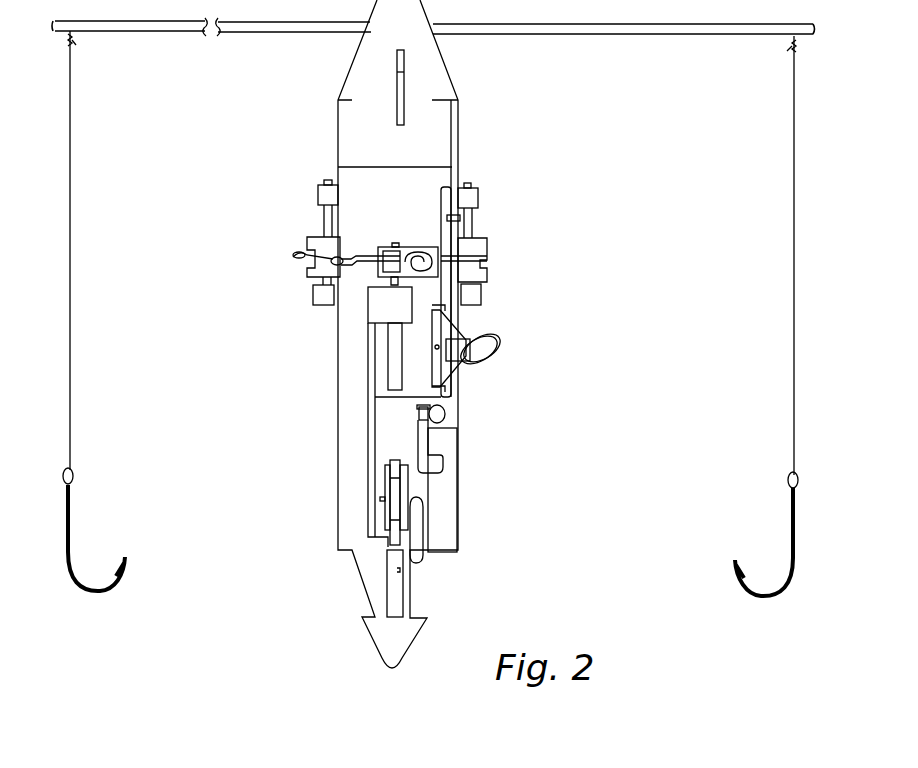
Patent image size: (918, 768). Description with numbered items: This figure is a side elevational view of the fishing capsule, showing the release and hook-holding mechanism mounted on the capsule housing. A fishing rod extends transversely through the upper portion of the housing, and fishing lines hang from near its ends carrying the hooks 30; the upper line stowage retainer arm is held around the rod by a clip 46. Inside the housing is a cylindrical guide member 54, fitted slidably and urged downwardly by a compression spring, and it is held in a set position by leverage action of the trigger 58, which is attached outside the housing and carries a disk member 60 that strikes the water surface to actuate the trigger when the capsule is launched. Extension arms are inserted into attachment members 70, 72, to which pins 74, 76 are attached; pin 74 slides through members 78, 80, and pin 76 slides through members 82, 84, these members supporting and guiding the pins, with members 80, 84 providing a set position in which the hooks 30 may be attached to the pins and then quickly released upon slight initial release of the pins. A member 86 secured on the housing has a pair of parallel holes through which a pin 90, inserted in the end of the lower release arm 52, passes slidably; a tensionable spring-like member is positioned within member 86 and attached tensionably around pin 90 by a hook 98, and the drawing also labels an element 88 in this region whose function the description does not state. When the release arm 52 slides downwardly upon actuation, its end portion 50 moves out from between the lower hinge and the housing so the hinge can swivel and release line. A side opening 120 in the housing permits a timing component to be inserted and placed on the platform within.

The hooks 30 is at (72, 535).
The clip 46 is at (422, 567).
The end portion 50 is at (385, 465).
The lower release arm 52 is at (372, 418).
The cylindrical guide member 54 is at (141, 761).
The first release member, or trigger 58 is at (468, 332).
The disk member 60 is at (489, 357).
The attachment member 70 is at (482, 296).
The attachment member 72 is at (313, 297).
The pin 74 is at (475, 220).
The pin 76 is at (321, 217).
The member 78 is at (487, 249).
The member 80 is at (478, 196).
The member 82 is at (307, 240).
The member 84 is at (318, 193).
The member 86 is at (411, 251).
The lever rod 88 is at (393, 250).
The pin 90 is at (398, 243).
The hook 98 is at (336, 268).
The side opening 120 is at (455, 426).